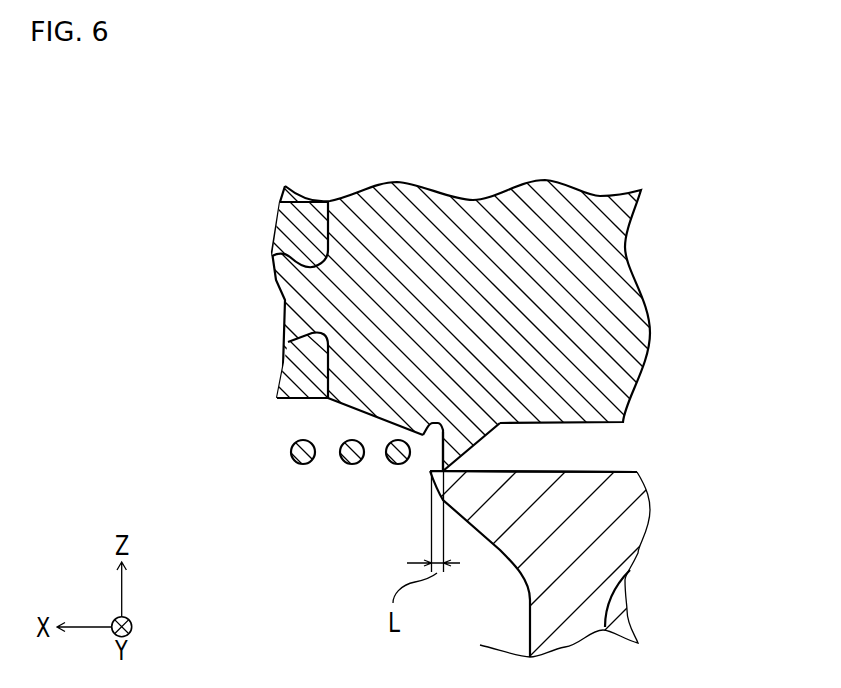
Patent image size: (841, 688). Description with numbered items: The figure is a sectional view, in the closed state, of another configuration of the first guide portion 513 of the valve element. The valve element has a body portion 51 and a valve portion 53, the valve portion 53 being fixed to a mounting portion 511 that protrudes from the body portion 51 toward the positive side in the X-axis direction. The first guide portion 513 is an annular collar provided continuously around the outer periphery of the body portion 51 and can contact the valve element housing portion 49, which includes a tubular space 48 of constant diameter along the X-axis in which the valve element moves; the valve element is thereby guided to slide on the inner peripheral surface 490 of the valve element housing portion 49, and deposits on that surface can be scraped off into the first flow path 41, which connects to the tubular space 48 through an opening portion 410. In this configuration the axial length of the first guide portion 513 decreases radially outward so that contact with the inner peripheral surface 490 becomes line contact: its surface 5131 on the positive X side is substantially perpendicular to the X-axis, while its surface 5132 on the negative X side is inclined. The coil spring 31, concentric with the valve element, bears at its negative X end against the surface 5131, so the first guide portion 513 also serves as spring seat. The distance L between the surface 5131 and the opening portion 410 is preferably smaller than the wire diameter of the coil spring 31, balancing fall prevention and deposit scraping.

The body portion 51 is at (475, 200).
The valve portion 53 is at (306, 203).
The mounting portion 511 is at (300, 287).
The first guide portion 513 is at (442, 480).
The surface on the positive side in the X-axis direction 5131 is at (441, 449).
The surface on the negative side in the X-axis direction 5132 is at (467, 452).
The inner peripheral surface 490 is at (611, 472).
The tubular space 48 is at (574, 453).
The valve element housing portion 49 is at (617, 598).
The coil spring 31 is at (291, 452).
The opening portion 410 is at (307, 491).
The first flow path 41 is at (356, 571).